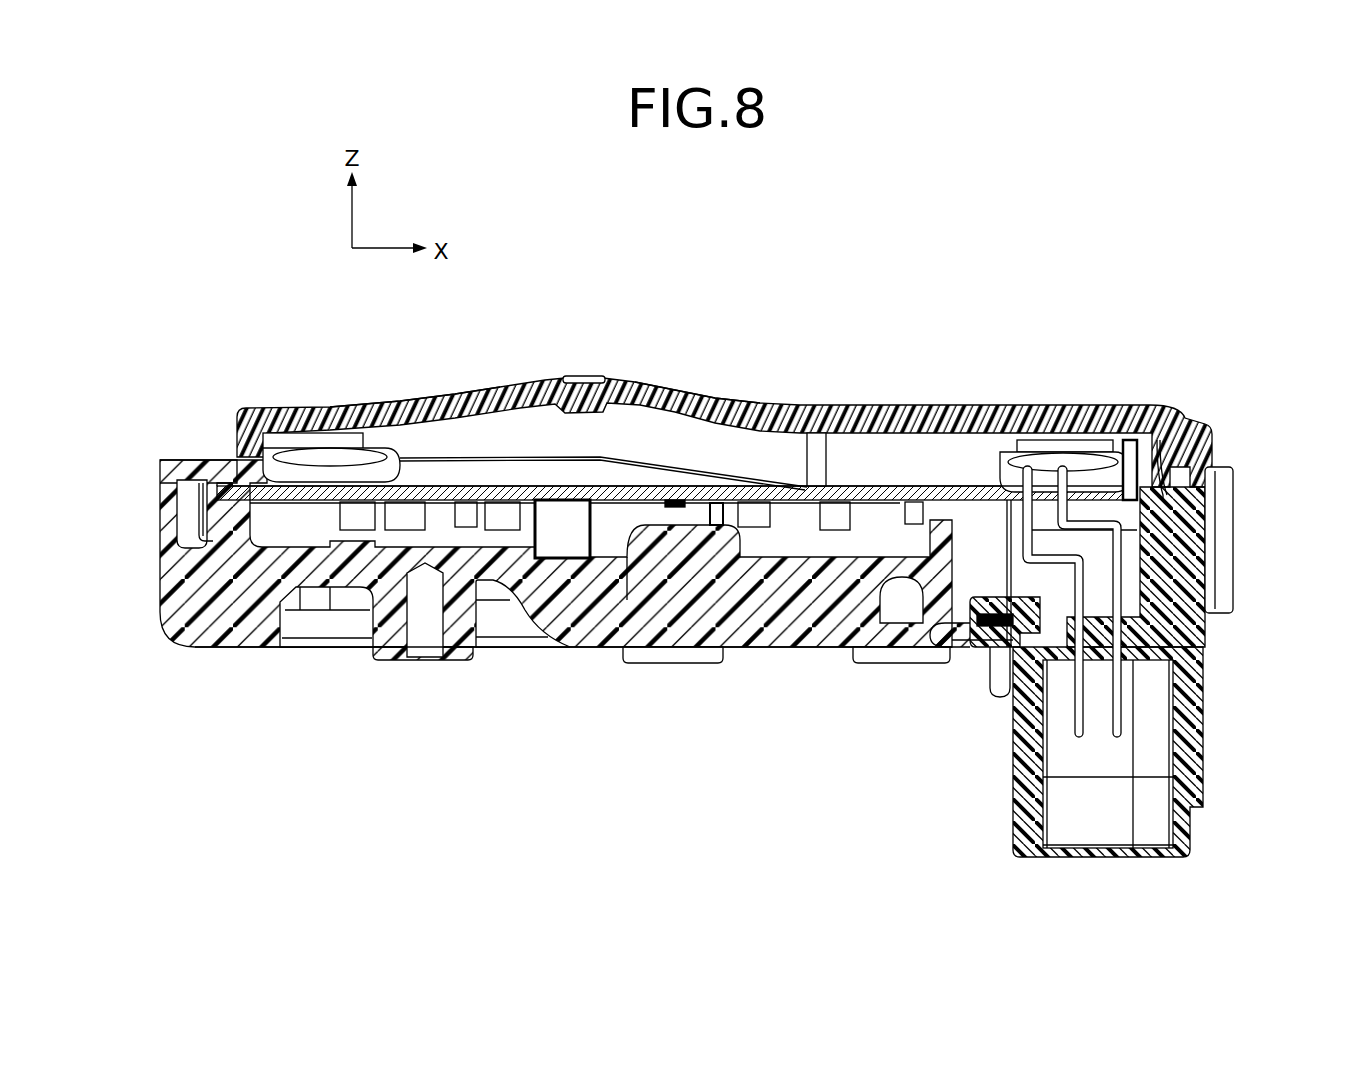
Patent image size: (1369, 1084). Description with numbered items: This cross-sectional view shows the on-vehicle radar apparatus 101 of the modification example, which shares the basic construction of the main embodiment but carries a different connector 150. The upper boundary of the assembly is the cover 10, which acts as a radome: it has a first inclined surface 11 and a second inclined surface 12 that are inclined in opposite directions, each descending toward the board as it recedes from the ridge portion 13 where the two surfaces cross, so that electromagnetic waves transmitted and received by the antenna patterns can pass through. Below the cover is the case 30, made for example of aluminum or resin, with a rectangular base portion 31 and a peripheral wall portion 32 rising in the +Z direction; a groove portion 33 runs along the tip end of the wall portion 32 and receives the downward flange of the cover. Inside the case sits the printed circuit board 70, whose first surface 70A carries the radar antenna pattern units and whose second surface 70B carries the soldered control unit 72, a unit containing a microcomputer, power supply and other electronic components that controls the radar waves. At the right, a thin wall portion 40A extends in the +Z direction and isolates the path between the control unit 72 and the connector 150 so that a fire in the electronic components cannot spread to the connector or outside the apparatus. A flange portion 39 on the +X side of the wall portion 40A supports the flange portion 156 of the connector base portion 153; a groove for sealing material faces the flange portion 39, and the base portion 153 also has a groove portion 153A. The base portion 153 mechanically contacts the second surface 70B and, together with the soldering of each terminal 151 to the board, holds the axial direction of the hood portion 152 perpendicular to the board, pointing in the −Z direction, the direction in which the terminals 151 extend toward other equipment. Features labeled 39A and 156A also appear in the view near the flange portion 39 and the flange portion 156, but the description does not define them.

The on-vehicle radar apparatus 101 is at (255, 275).
The cover 10 is at (735, 375).
The first inclined surface 11 is at (455, 394).
The second inclined surface 12 is at (701, 384).
The ridge portion 13 is at (586, 377).
The case 30 is at (508, 565).
The base portion 31 is at (707, 620).
The wall portion 32 is at (168, 532).
The groove portion 33 is at (201, 482).
The flange portion 39 is at (977, 632).
The holding portion 39A is at (968, 621).
The wall portion 40A is at (957, 524).
The printed circuit board 70 is at (677, 525).
The first surface 70A is at (753, 487).
The second surface 70B is at (763, 512).
The control unit 72 is at (564, 534).
The connector 150 is at (1246, 485).
The terminal 151 is at (1080, 715).
The hood portion 152 is at (1020, 803).
The base portion 153 is at (1190, 621).
The groove portion 153A is at (1160, 490).
The flange portion 156 is at (975, 602).
The bracket end portion 156A is at (990, 660).